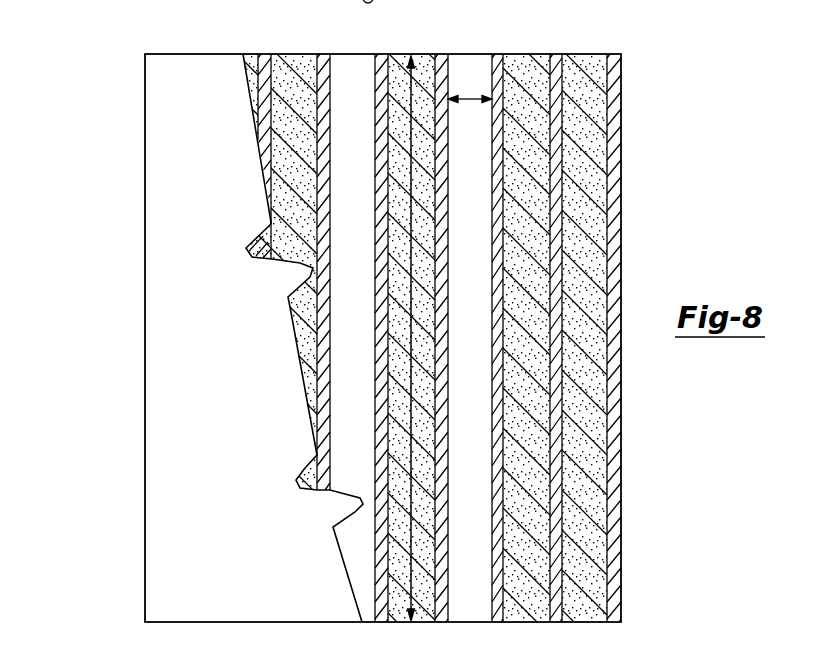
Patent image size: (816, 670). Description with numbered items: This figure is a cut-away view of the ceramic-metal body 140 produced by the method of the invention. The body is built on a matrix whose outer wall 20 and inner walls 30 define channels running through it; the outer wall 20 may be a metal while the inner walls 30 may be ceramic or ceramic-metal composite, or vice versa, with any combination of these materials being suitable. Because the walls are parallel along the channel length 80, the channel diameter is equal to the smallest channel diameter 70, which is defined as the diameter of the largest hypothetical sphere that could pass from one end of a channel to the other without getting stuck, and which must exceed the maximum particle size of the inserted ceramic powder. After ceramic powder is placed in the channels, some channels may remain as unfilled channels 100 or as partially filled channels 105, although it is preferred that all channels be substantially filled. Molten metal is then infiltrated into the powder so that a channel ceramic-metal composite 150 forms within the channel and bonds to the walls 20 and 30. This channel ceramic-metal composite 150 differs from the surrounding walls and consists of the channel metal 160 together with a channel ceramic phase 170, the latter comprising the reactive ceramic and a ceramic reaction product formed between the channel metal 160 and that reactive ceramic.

The outer wall 20 is at (623, 560).
The inner walls 30 is at (510, 90).
The smallest channel diameter 70 is at (467, 98).
The channel length 80 is at (407, 133).
The unfilled channels 100 is at (343, 323).
The partially filled channels 105 is at (463, 198).
The ceramic-metal body 140 is at (112, 166).
The channel ceramic-metal composite 150 is at (530, 250).
The channel metal 160 is at (533, 220).
The channel ceramic phase 170 is at (537, 463).